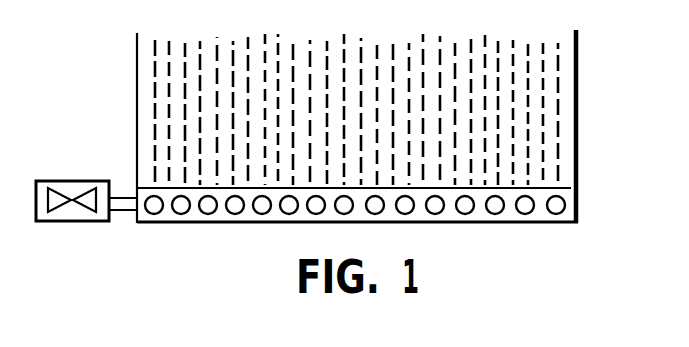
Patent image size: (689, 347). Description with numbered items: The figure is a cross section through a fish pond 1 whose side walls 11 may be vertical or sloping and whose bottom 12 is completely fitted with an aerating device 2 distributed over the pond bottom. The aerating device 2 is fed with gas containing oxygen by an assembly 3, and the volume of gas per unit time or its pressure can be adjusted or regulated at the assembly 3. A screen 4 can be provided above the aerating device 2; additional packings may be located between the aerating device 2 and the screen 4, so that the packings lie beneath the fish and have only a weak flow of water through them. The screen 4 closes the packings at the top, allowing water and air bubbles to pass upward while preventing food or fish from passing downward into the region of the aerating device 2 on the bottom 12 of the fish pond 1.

The fish pond 1 is at (543, 70).
The side walls 11 is at (578, 117).
The screen 4 is at (570, 189).
The bottom 12 is at (548, 226).
The aerating device 2 is at (180, 208).
The assembly 3 is at (68, 190).